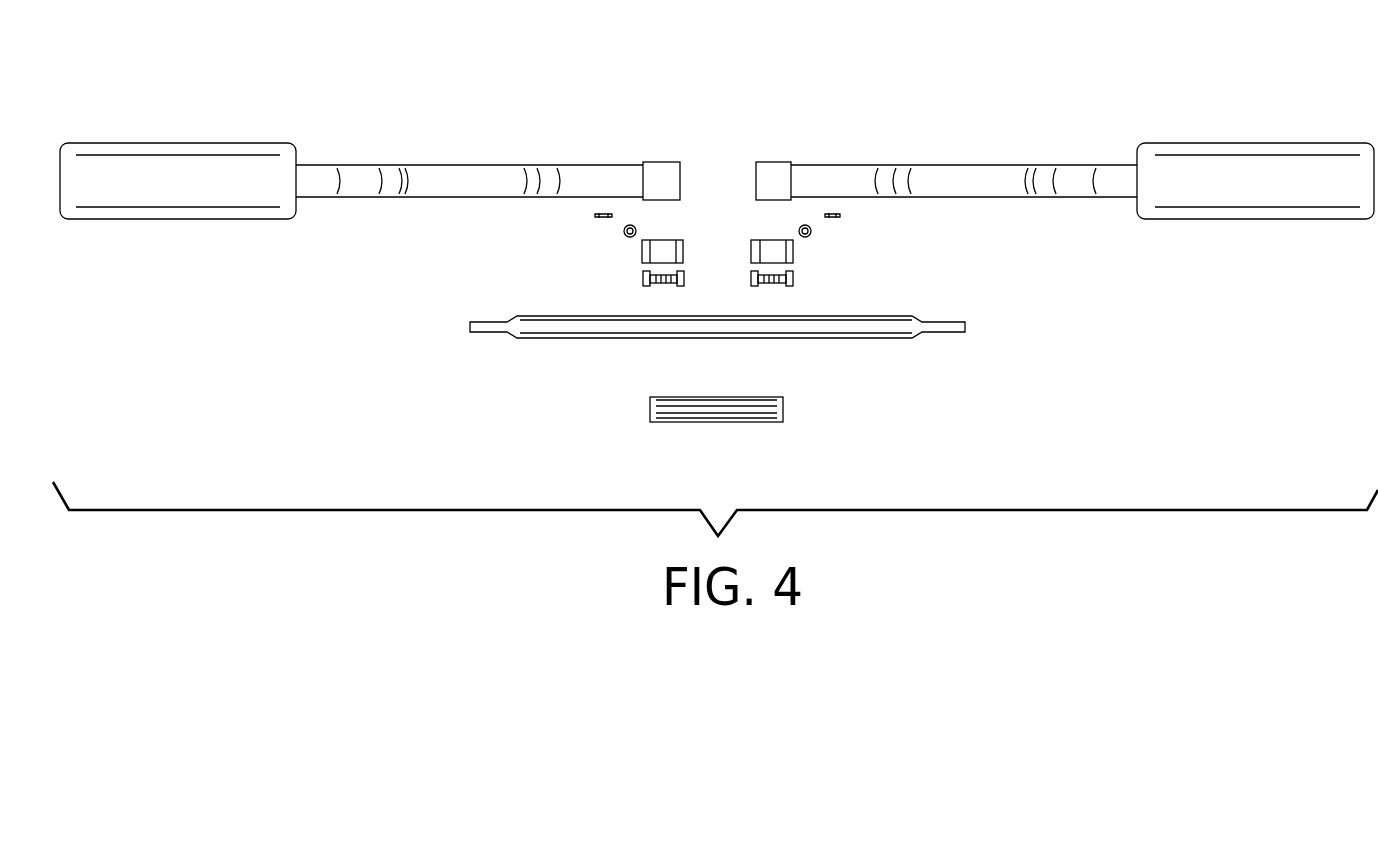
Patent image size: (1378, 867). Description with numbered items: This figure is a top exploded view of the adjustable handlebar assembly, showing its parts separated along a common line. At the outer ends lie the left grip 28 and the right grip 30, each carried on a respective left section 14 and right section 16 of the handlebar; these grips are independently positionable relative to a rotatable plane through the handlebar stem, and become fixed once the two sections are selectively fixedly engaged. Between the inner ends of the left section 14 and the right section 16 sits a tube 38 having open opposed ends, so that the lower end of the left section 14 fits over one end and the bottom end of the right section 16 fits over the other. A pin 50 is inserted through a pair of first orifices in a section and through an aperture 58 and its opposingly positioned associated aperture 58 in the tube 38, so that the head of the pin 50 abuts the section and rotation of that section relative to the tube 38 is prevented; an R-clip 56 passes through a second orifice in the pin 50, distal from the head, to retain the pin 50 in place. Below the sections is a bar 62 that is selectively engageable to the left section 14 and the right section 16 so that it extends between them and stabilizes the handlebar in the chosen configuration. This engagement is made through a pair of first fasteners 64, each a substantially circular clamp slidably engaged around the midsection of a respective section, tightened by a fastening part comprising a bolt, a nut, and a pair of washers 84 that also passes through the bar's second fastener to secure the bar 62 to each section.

The left section 14 is at (498, 160).
The right section 16 is at (977, 163).
The left grip 28 is at (171, 140).
The right grip 30 is at (1214, 143).
The tube 38 is at (777, 408).
The pin 50 is at (813, 232).
The R-clip 56 is at (832, 212).
The apertures 58 is at (747, 413).
The bar 62 is at (914, 316).
The first fasteners 64 is at (771, 244).
The washers 84 is at (660, 280).